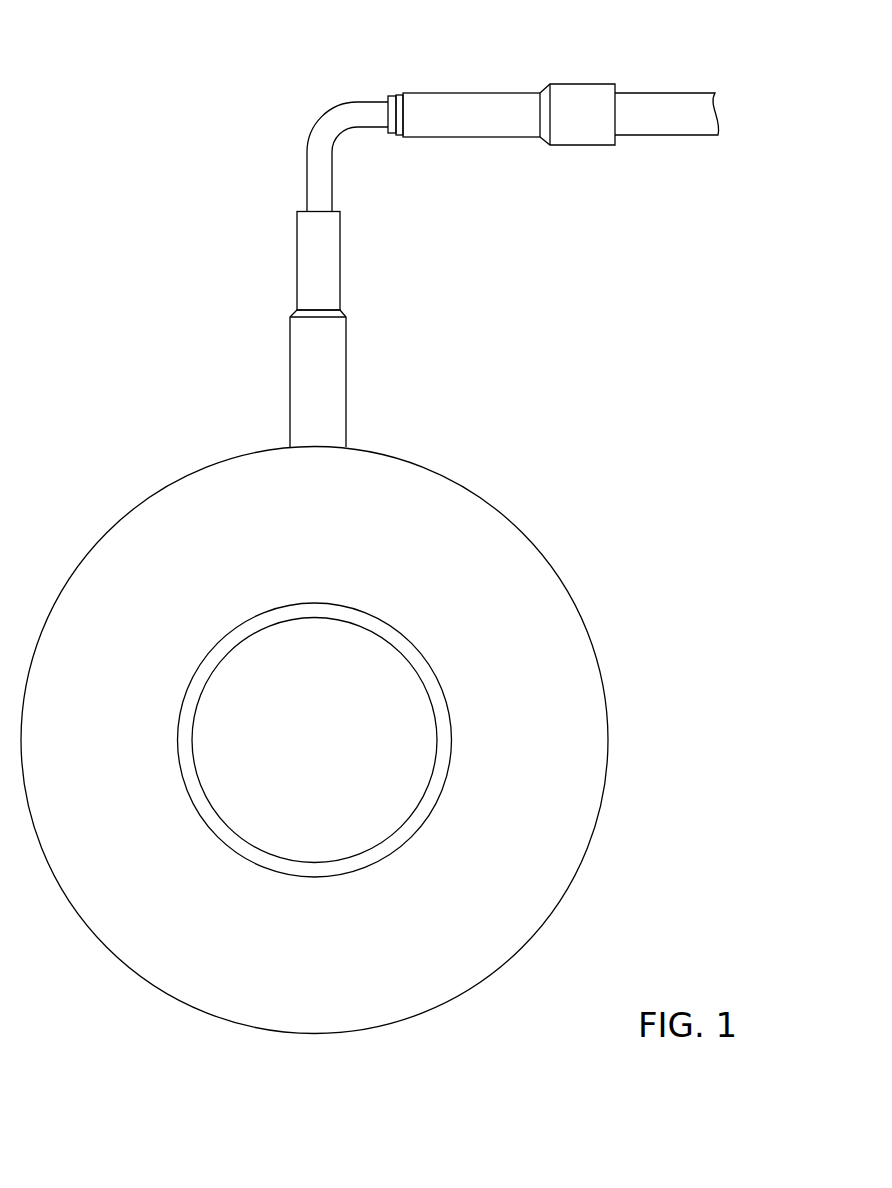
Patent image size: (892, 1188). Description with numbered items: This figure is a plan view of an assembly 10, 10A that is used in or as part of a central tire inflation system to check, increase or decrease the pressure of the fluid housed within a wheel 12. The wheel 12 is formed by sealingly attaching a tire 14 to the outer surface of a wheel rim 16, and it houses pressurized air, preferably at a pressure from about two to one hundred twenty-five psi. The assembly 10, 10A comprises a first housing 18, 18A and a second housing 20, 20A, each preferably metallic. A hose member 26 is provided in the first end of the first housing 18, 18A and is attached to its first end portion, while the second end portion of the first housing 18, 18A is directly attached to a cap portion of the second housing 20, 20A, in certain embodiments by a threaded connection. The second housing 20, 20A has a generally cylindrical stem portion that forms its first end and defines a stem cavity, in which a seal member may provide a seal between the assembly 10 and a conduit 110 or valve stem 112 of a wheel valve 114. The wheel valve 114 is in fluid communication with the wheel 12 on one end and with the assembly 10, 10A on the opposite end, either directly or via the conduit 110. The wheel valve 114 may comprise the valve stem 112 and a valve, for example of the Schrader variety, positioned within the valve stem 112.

The assembly 10 is at (370, 523).
The assembly 10A is at (349, 50).
The wheel 12 is at (614, 553).
The tire 14 is at (608, 740).
The wheel rim 16 is at (437, 740).
The first housing 18 is at (587, 154).
The first housing 18A is at (582, 146).
The second housing 20 is at (464, 154).
The second housing 20A is at (475, 138).
The hose member 26 is at (665, 137).
The conduit 110 is at (332, 185).
The valve stem 112 is at (346, 382).
The wheel valve 114 is at (237, 392).